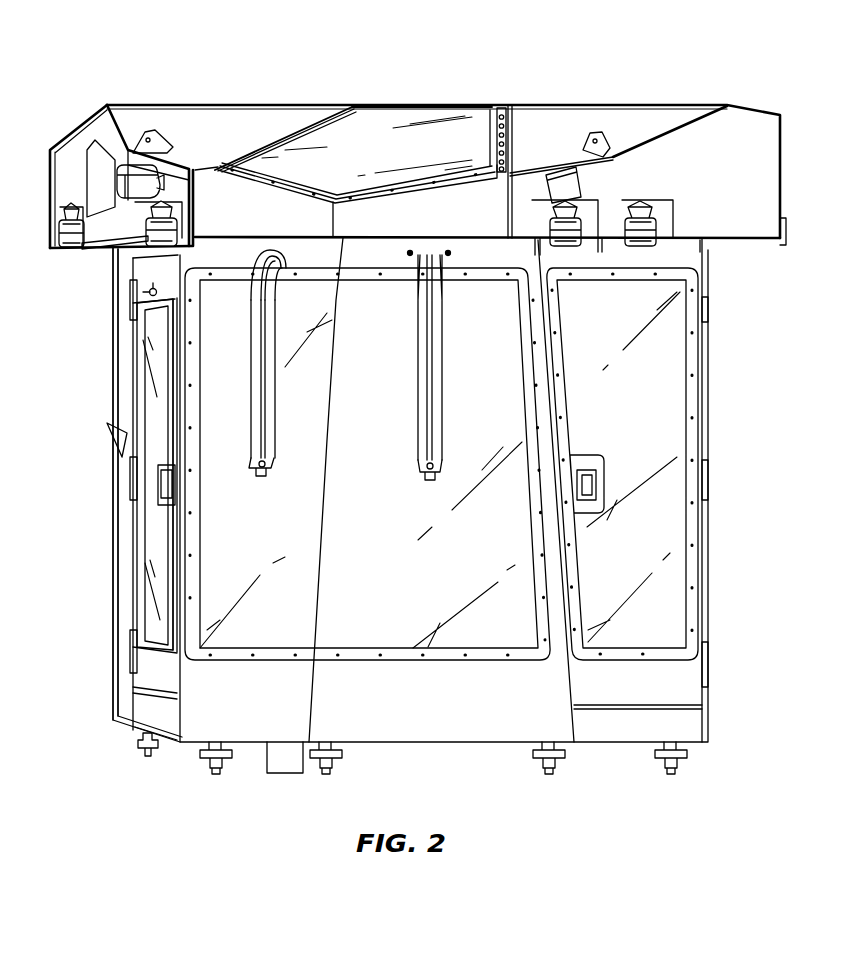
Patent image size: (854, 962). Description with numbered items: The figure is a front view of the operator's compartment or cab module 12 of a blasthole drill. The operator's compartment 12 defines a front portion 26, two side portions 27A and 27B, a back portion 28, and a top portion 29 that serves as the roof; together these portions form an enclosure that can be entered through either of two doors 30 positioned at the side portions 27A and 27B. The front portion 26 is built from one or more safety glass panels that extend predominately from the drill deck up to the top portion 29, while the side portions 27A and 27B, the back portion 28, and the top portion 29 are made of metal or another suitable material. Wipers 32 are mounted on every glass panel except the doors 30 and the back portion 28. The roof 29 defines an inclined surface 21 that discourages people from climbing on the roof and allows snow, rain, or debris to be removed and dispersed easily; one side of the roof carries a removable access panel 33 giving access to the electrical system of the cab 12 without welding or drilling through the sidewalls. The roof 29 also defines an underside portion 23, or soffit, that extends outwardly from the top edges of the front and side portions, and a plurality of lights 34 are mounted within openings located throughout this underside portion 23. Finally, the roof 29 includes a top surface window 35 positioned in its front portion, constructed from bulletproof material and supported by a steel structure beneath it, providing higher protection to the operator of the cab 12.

The operator's compartment 12 is at (670, 46).
The inclined surface 21 is at (228, 118).
The underside portion 23 is at (97, 250).
The front portion 26 is at (472, 630).
The side portion 27A is at (125, 540).
The side portion 27B is at (663, 683).
The back portion 28 is at (113, 340).
The top portion 29 is at (298, 105).
The door 30 is at (152, 412).
The wiper 32 is at (265, 437).
The removable access panel 33 is at (90, 160).
The light 34 is at (188, 228).
The top surface window 35 is at (382, 128).